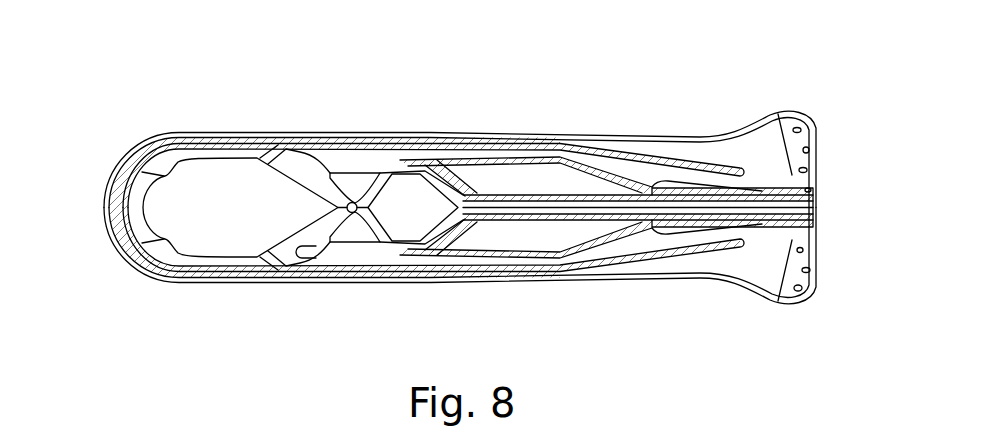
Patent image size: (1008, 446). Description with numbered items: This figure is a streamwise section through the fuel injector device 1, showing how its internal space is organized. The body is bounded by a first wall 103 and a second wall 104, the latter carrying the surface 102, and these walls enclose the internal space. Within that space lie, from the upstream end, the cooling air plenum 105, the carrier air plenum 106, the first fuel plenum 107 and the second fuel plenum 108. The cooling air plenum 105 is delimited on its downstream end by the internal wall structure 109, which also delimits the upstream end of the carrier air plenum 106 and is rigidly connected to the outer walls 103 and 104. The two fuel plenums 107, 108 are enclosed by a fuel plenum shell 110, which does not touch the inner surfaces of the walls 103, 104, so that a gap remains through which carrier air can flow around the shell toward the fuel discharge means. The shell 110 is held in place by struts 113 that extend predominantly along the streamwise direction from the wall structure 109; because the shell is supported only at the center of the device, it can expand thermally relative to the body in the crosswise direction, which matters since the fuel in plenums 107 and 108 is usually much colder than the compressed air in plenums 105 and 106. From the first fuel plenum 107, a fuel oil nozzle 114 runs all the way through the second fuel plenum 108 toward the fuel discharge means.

The fuel injector device 1 is at (662, 100).
The surface 102 is at (230, 283).
The first wall 103 is at (270, 132).
The second wall 104 is at (499, 283).
The cooling air plenum 105 is at (252, 219).
The carrier air plenum 106 is at (357, 240).
The first fuel plenum 107 is at (434, 219).
The second fuel plenum 108 is at (541, 242).
The internal wall structure 109 is at (312, 256).
The fuel plenum shell 110 is at (594, 243).
The struts 113 is at (358, 166).
The fuel oil nozzle 114 is at (543, 205).